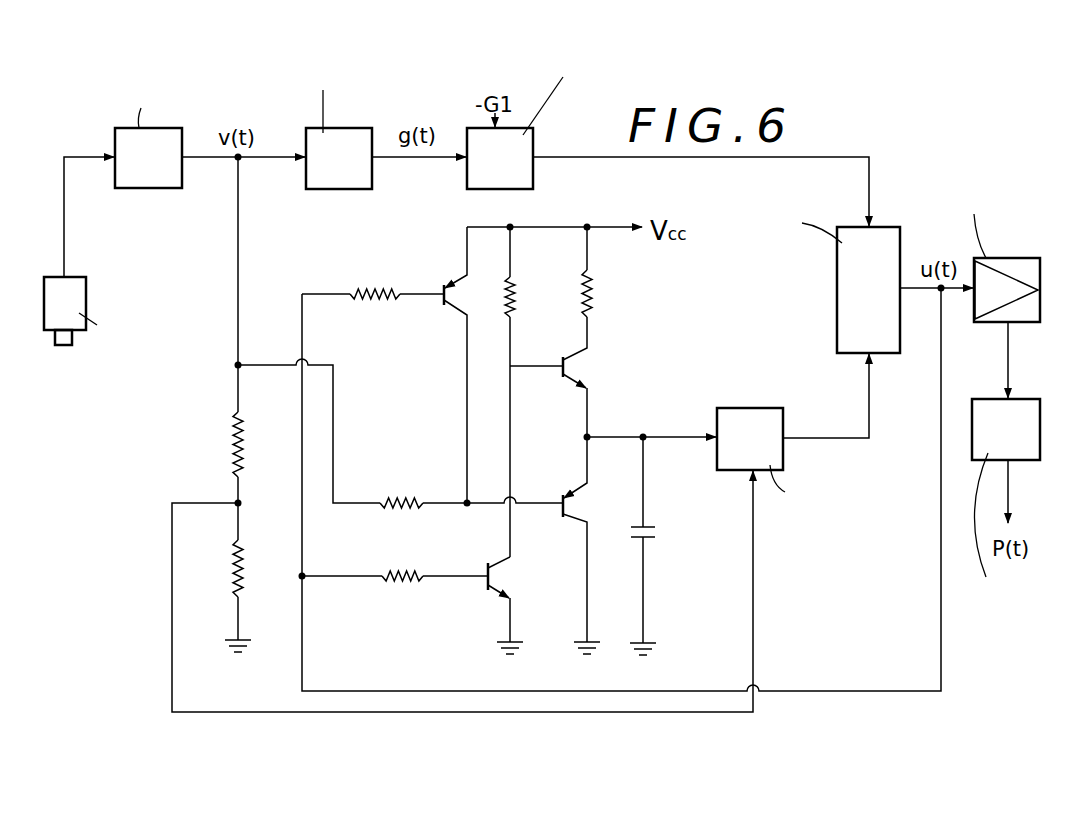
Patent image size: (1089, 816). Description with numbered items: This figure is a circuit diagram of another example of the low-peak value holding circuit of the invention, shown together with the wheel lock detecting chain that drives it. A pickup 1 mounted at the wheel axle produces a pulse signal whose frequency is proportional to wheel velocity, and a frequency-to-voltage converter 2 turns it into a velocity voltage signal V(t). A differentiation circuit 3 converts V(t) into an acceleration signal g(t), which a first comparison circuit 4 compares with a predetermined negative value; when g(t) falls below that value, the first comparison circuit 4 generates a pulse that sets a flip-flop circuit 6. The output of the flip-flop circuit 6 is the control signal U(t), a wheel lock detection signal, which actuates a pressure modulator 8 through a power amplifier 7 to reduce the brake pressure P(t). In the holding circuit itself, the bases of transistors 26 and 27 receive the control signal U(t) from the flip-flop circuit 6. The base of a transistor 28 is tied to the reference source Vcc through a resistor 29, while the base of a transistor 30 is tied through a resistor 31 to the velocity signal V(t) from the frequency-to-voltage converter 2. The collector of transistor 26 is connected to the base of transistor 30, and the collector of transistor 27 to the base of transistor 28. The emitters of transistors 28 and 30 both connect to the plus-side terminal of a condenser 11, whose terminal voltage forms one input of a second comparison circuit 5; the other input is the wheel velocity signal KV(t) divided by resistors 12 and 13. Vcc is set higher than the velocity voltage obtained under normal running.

The pickup 1 is at (106, 311).
The frequency-to-voltage converter 2 is at (120, 113).
The differentiation circuit 3 is at (354, 115).
The first comparison circuit 4 is at (566, 111).
The second comparison circuit 5 is at (811, 472).
The flip-flop circuit 6 is at (835, 299).
The power amplifier 7 is at (1004, 254).
The pressure modulator 8 is at (1011, 510).
The condenser 11 is at (657, 532).
The resistor 12 is at (229, 445).
The resistor 13 is at (229, 573).
The transistor 26 is at (457, 310).
The transistor 27 is at (481, 585).
The transistor 28 is at (573, 383).
The resistor 29 is at (519, 302).
The transistor 30 is at (574, 521).
The resistor 31 is at (397, 491).